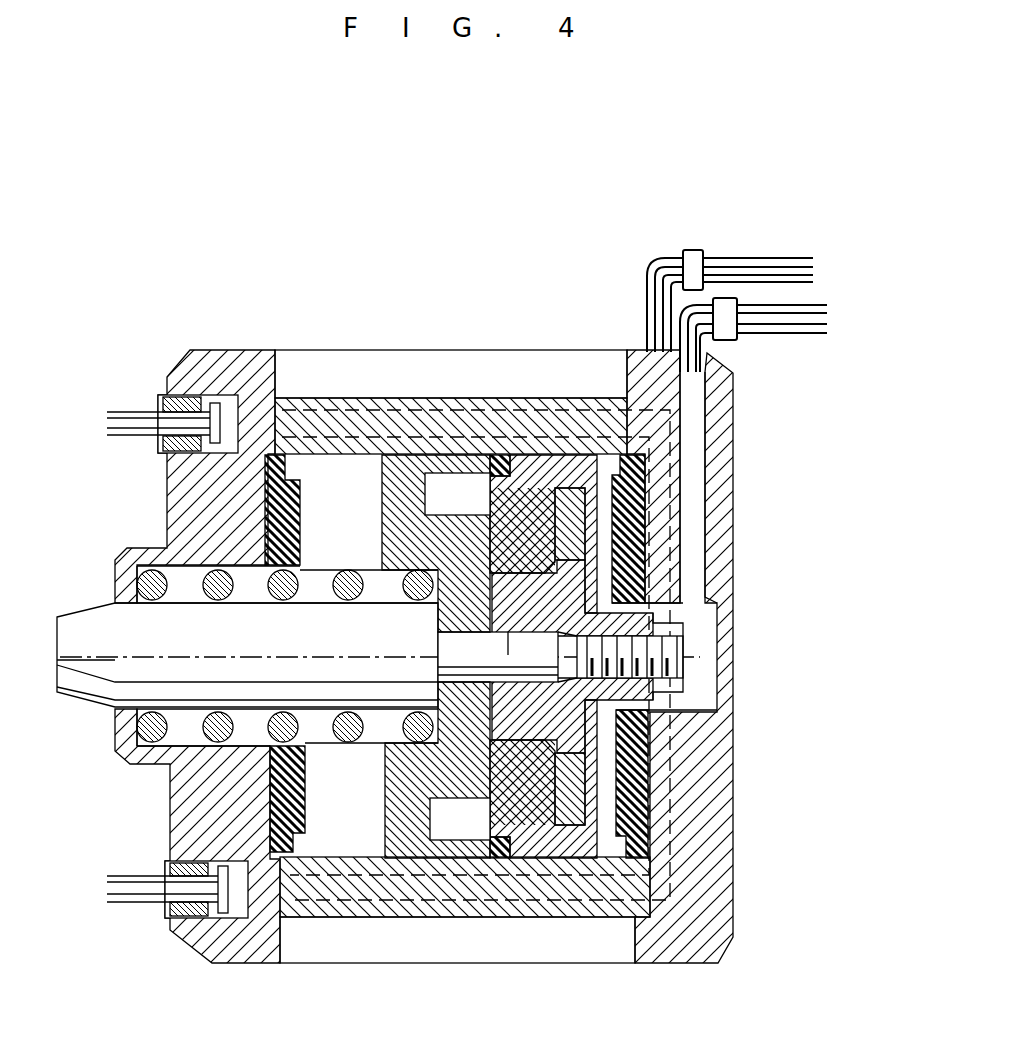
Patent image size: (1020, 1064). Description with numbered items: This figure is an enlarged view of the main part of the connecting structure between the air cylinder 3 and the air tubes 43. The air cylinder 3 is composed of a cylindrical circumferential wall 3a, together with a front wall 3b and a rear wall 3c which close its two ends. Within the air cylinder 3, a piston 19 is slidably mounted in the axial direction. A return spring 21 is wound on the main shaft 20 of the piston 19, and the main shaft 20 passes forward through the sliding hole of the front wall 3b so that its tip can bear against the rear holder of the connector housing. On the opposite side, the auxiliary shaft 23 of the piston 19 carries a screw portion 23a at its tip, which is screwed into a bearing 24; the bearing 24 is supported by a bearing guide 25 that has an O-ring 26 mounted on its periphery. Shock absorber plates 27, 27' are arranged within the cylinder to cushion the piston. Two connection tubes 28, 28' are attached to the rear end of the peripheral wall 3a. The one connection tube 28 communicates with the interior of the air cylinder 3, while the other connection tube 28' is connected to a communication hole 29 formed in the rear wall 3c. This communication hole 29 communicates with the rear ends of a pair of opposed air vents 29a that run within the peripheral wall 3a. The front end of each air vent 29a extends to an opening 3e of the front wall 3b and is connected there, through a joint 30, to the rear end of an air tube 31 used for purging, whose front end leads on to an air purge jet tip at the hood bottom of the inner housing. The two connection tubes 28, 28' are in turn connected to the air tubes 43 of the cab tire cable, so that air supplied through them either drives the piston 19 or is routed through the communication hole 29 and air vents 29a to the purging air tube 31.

The air cylinder 3 is at (284, 312).
The cylindrical circumferential wall 3a is at (372, 365).
The front wall 3b is at (213, 352).
The rear wall 3c is at (723, 425).
The opening 3e is at (250, 921).
The piston 19 is at (403, 858).
The main shaft 20 is at (88, 622).
The return spring 21 is at (133, 727).
The auxiliary shaft 23 is at (527, 640).
The screw portion 23a is at (673, 650).
The bearing 24 is at (577, 757).
The bearing guide 25 is at (555, 842).
The O-ring 26 is at (505, 858).
The shock absorber plate 27 is at (370, 653).
The shock absorber plate 27' is at (713, 784).
The connection tube 28 is at (699, 335).
The connection tube 28' is at (667, 280).
The communication hole 29 is at (695, 492).
The air vent 29a is at (455, 410).
The joint 30 is at (197, 948).
The air tube 31 is at (125, 412).
The air tube 43 is at (805, 310).